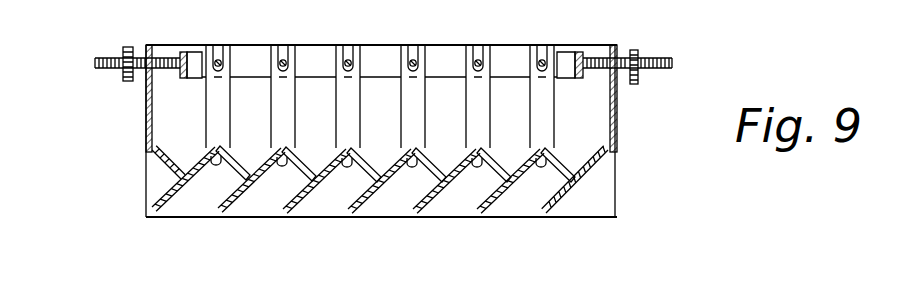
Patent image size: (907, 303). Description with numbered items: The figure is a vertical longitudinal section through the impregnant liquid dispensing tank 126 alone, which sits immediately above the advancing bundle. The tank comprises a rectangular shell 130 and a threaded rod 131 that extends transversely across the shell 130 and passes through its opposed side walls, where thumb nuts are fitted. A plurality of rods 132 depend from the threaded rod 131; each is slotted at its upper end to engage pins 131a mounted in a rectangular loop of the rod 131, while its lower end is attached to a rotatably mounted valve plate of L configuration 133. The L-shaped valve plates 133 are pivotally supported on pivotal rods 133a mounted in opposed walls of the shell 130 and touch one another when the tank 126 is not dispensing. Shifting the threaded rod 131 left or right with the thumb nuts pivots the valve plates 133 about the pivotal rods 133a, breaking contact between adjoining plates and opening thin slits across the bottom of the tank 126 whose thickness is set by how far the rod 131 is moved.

The liquid dispensing tank 126 is at (137, 157).
The rectangular shell 130 is at (147, 112).
The threaded rod 131 is at (186, 30).
The pins 131a is at (481, 62).
The rods 132 is at (483, 106).
The L-shaped valve plate 133 is at (220, 198).
The pivotal rods 133a is at (340, 172).